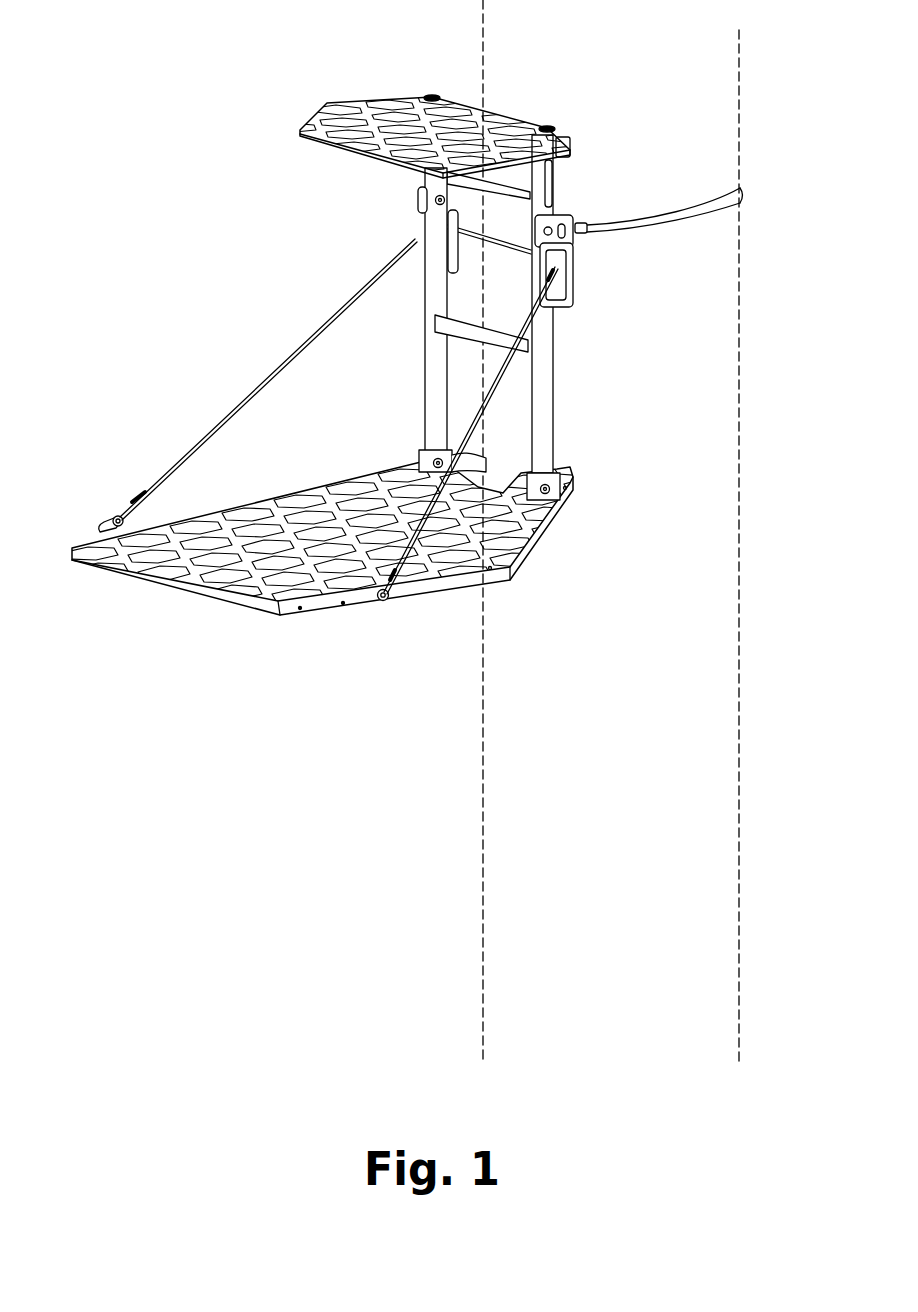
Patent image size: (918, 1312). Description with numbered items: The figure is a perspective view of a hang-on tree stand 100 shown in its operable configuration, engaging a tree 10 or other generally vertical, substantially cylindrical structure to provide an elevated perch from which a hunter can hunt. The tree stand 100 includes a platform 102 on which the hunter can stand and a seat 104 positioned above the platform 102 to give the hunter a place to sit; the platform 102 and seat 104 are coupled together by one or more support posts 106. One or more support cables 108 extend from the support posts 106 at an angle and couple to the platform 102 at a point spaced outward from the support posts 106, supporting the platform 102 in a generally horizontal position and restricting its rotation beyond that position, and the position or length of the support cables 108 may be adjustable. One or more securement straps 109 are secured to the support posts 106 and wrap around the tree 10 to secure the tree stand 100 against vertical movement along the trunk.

The tree 10 is at (739, 30).
The tree stand 100 is at (210, 150).
The platform 102 is at (222, 593).
The seat 104 is at (355, 100).
The support post 106 is at (425, 402).
The support cable 108 is at (258, 388).
The securement strap 109 is at (660, 225).